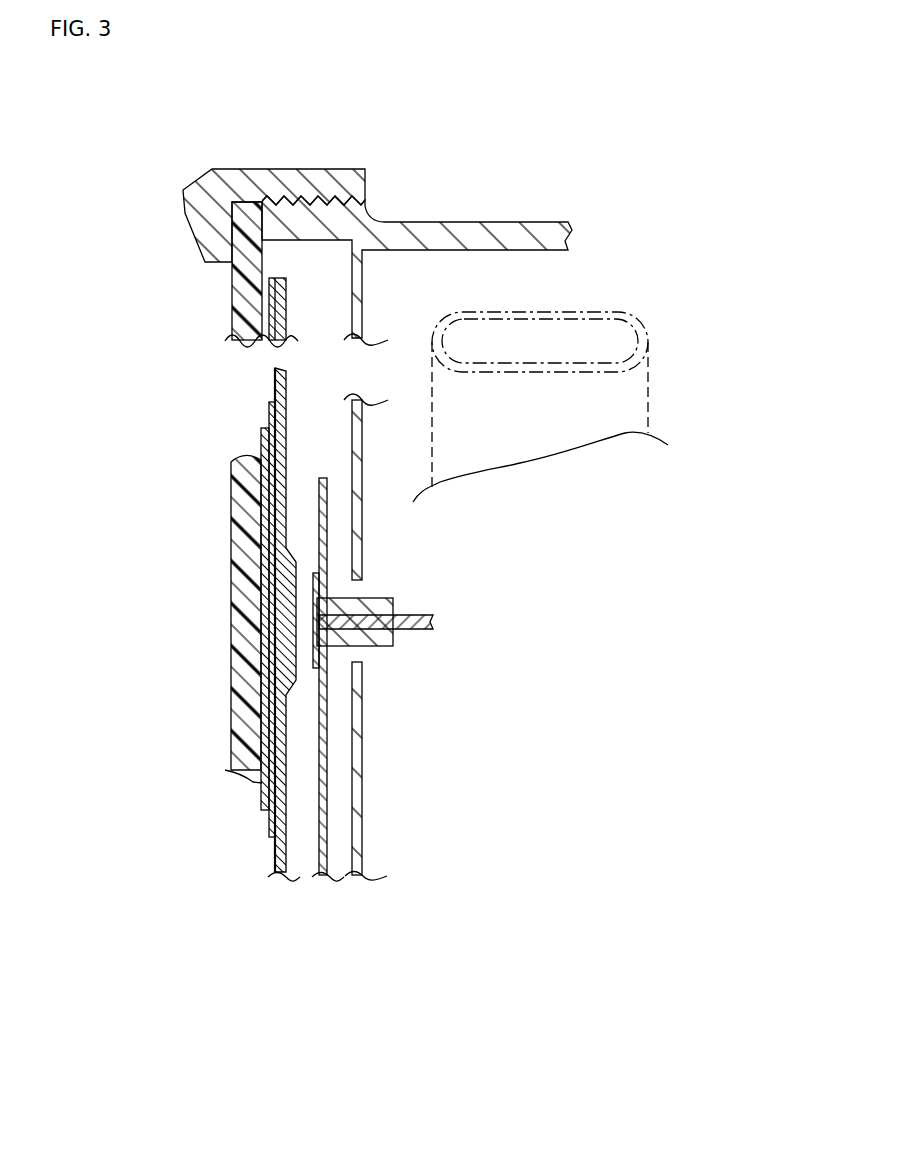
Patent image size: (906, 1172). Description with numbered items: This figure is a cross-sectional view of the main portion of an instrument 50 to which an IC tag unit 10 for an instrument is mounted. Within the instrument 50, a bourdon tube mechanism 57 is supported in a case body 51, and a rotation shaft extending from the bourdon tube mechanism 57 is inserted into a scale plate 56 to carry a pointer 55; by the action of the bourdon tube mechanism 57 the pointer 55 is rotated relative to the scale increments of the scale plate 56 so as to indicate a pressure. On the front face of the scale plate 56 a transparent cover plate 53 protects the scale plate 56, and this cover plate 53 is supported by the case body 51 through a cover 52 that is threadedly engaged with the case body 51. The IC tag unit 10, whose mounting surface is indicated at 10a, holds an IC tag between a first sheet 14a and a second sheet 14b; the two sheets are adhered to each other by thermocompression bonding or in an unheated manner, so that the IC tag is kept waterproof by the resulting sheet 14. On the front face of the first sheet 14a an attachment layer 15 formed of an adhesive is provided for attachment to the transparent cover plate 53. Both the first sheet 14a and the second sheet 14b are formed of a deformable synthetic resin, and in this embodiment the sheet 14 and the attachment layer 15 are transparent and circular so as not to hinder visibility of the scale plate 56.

The IC tag unit 10 is at (245, 738).
The battery pack wall surface 10a is at (243, 619).
The sheet 14 is at (177, 579).
The first sheet 14a is at (270, 412).
The second sheet 14b is at (275, 385).
The attachment layer 15 is at (262, 442).
The instrument 50 is at (520, 192).
The case body 51 is at (465, 221).
The cover 52 is at (185, 183).
The transparent cover plate 53 is at (230, 302).
The pointer 55 is at (325, 860).
The scale plate 56 is at (362, 282).
The bourdon tube mechanism 57 is at (648, 410).